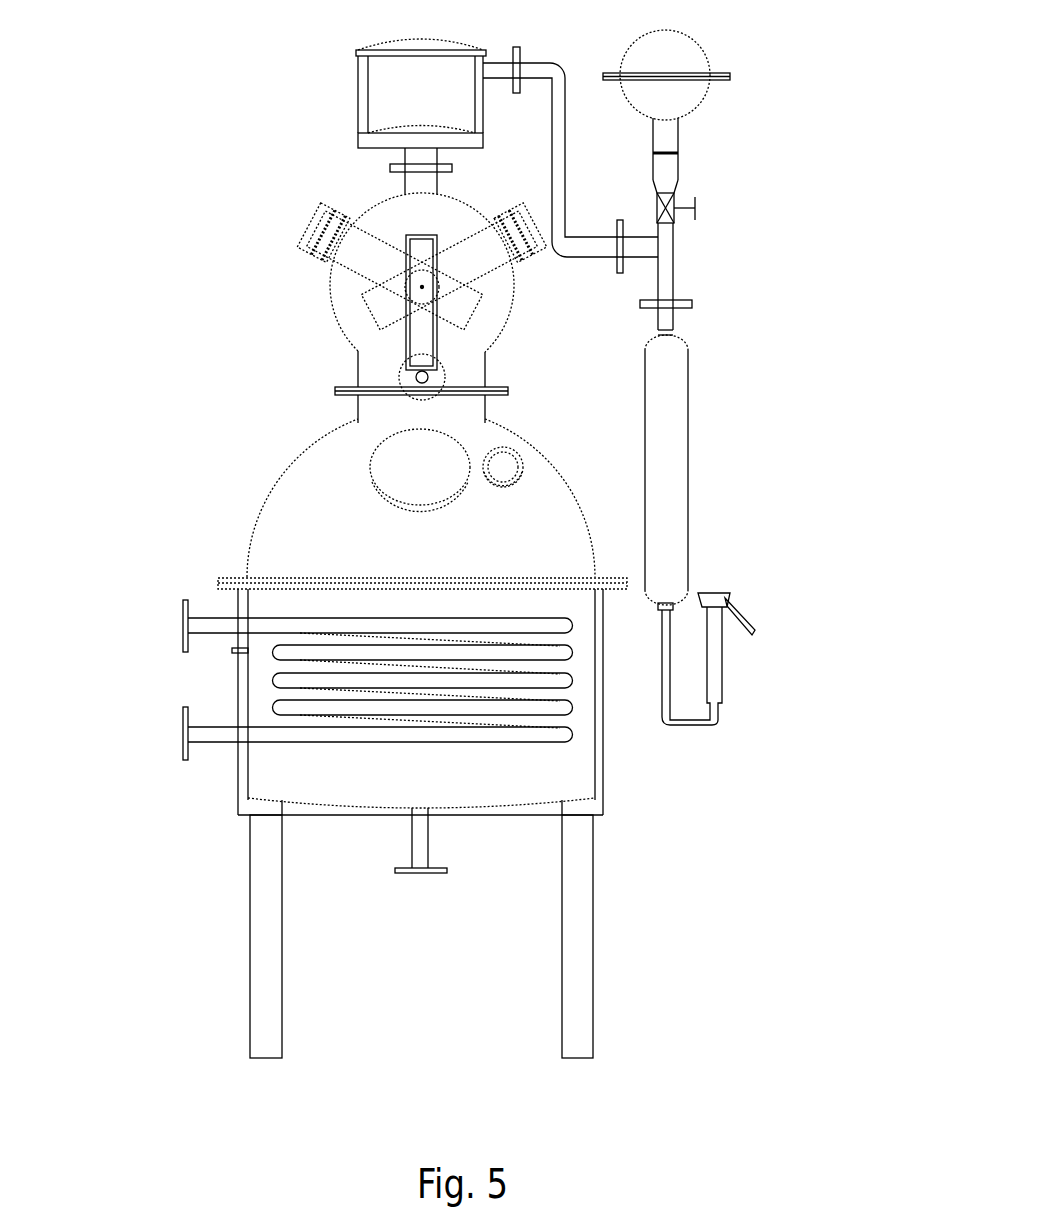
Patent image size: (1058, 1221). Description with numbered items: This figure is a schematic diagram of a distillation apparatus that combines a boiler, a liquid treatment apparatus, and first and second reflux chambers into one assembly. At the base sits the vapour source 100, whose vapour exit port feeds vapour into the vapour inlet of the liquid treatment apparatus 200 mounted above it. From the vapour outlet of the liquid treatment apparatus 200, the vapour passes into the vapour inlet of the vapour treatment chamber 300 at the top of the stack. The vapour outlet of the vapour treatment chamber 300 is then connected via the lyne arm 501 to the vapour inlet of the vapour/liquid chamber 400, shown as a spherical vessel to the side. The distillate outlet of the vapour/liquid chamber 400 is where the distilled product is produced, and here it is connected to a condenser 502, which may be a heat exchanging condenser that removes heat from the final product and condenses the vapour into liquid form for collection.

The vapour source 100 is at (246, 696).
The liquid treatment apparatus 200 is at (335, 291).
The vapour treatment chamber 300 is at (350, 88).
The vapour/liquid chamber 400 is at (724, 70).
The lyne arm 501 is at (564, 192).
The condenser 502 is at (694, 418).